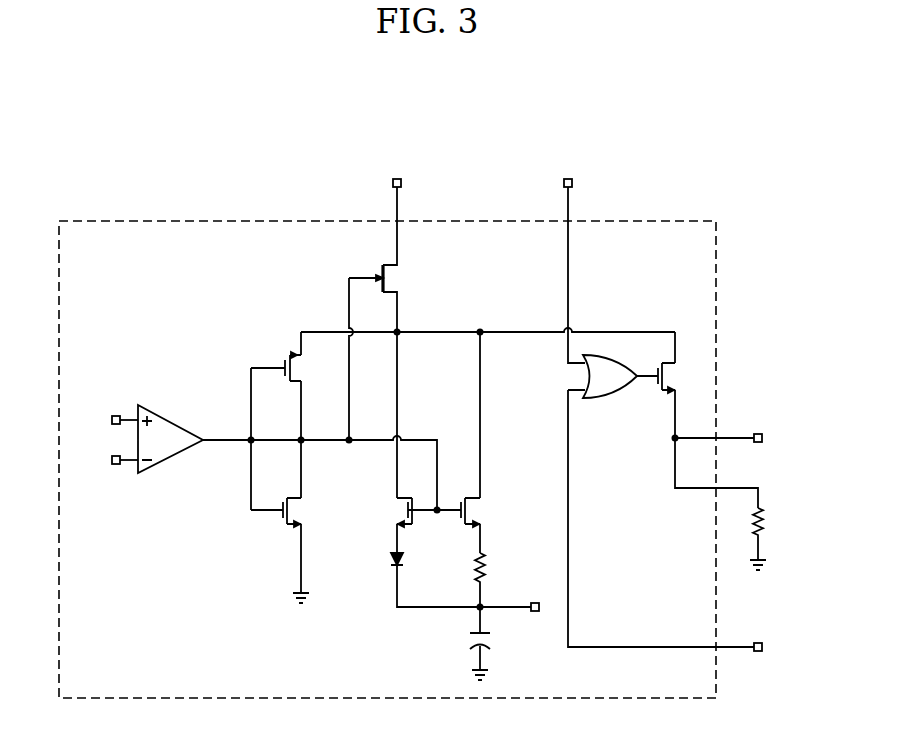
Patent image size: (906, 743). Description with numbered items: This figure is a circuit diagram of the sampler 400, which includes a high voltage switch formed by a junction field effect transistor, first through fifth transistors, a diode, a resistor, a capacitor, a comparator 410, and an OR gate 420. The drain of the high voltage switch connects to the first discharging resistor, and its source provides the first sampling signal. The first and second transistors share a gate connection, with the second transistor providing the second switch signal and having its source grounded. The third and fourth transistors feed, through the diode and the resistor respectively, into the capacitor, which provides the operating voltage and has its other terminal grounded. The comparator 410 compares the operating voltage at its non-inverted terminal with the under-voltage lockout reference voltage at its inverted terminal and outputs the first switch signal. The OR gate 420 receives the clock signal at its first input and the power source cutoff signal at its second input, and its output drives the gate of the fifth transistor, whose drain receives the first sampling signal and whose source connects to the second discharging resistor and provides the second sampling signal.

The sampler 400 is at (214, 218).
The comparator 410 is at (166, 419).
The OR gate 420 is at (606, 400).